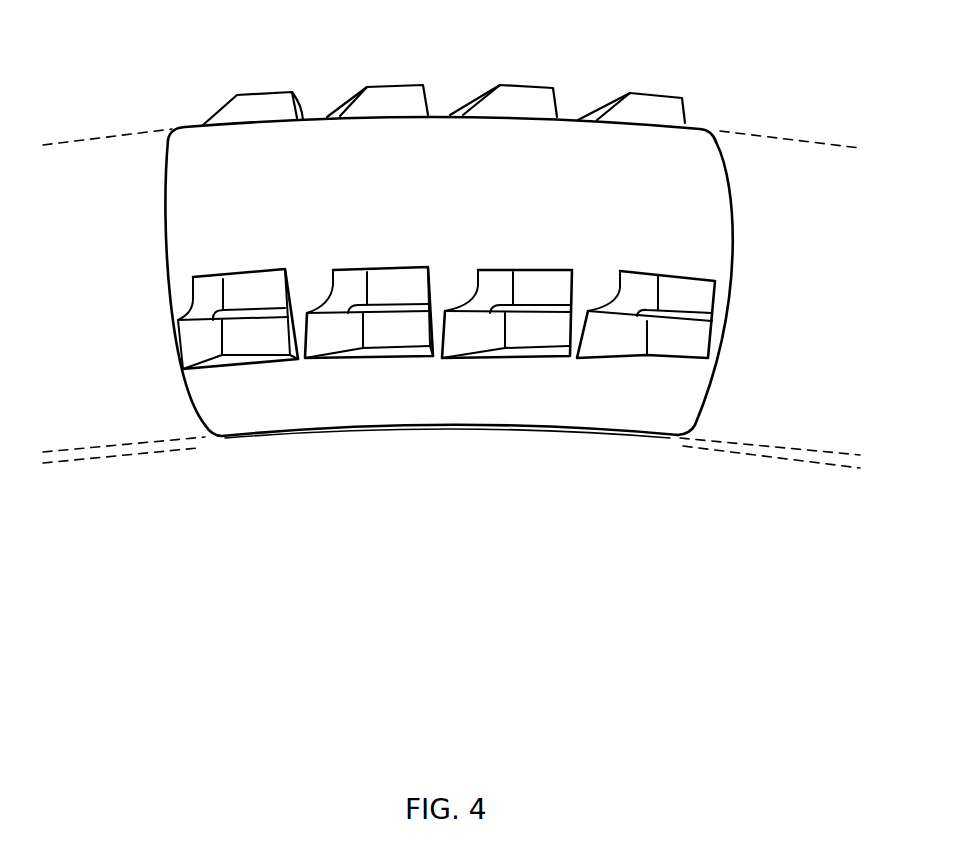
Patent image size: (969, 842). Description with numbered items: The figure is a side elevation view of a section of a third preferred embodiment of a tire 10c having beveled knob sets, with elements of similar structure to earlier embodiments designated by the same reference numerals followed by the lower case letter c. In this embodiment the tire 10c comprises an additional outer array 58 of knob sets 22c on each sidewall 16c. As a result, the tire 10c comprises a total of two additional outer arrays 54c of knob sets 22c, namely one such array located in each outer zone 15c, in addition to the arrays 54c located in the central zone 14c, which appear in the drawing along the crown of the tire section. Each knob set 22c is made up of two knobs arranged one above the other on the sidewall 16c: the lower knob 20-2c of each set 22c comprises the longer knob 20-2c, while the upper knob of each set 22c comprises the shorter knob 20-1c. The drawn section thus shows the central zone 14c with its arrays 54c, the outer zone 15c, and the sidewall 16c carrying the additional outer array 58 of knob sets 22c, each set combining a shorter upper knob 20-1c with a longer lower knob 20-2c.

The tire 10c is at (451, 242).
The central zone 14c is at (446, 105).
The outer zone 15c is at (160, 164).
The sidewall 16c is at (165, 209).
The shorter knob 20-1c is at (241, 276).
The longer knob 20-2c is at (206, 369).
The knob set 22c is at (391, 268).
The array of knob sets 54c is at (703, 112).
The additional outer array 58 is at (165, 345).